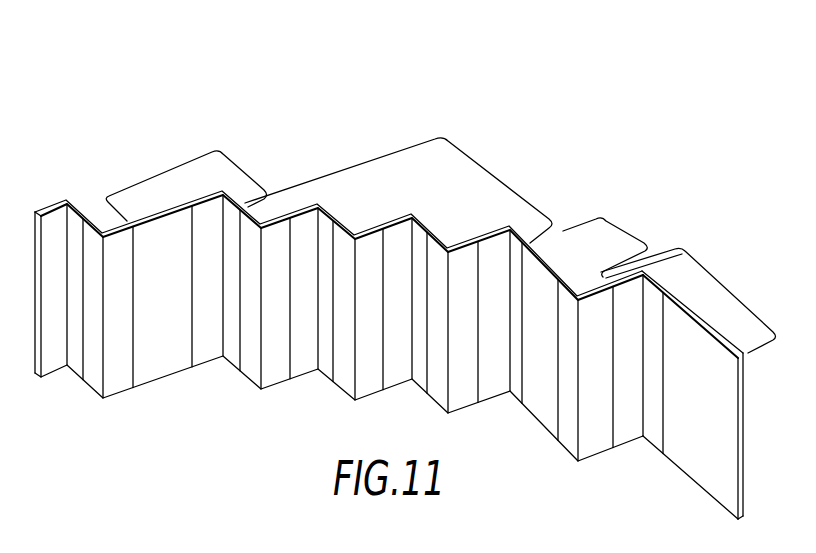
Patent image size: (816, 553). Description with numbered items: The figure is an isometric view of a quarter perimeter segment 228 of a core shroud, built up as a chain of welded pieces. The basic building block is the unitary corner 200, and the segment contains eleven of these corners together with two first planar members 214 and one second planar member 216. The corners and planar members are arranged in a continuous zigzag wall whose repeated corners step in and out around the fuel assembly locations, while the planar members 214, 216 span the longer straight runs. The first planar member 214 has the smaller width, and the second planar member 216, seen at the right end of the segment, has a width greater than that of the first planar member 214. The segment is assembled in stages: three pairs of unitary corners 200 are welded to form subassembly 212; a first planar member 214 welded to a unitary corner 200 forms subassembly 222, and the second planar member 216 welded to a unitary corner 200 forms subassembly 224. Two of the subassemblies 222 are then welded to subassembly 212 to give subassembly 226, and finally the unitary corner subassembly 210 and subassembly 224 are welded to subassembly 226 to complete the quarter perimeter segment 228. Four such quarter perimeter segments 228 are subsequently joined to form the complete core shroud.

The unitary corner 200 is at (405, 278).
The unitary corner subassembly 210 is at (389, 310).
The subassembly 212 is at (540, 160).
The first planar member 214 is at (184, 298).
The second planar member 216 is at (717, 408).
The subassembly 222 is at (200, 147).
The subassembly 224 is at (733, 293).
The subassembly 226 is at (676, 234).
The quarter perimeter segment 228 is at (137, 448).